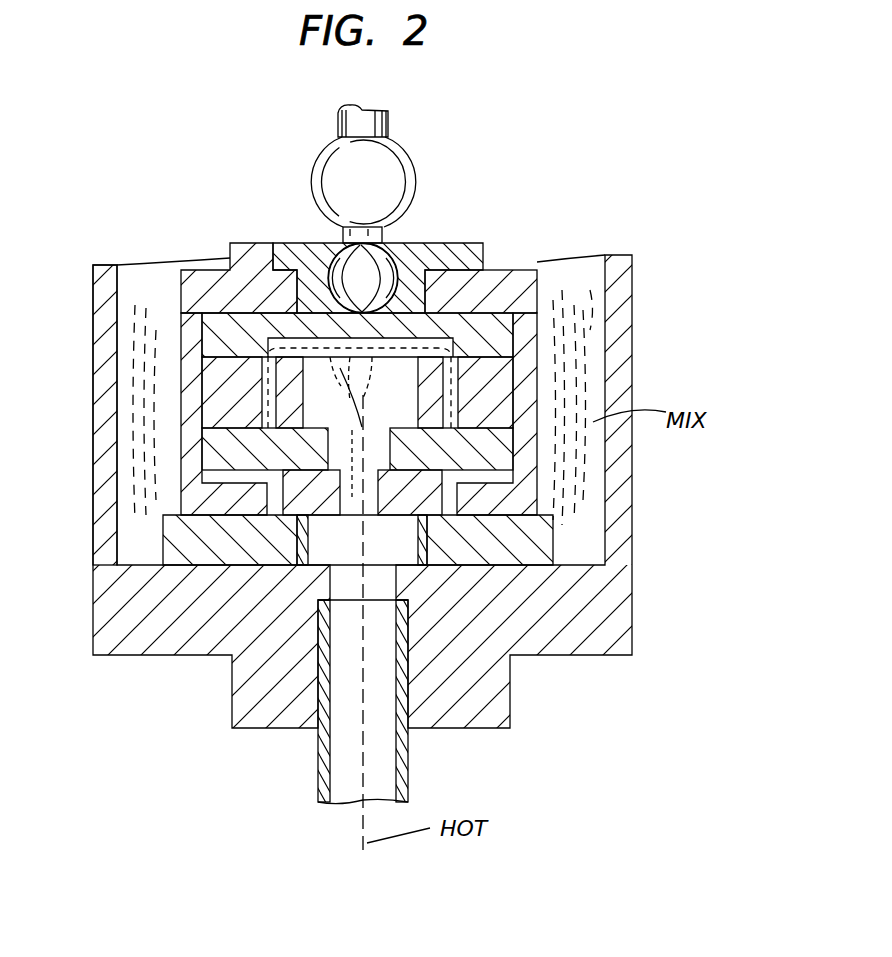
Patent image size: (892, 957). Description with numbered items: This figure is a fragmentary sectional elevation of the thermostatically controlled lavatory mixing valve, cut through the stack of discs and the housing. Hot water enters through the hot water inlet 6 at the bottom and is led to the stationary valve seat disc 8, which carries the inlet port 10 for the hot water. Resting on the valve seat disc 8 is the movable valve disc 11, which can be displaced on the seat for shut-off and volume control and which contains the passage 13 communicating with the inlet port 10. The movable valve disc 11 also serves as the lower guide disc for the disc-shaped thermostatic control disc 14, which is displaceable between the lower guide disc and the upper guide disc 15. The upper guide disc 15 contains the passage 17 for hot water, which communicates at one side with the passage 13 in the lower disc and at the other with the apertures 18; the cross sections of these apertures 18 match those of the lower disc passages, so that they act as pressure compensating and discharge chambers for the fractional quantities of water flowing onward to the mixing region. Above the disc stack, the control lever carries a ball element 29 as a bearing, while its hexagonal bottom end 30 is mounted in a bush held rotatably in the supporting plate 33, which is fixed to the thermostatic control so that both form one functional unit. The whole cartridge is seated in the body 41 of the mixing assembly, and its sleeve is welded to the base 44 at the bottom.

The hot water inlet 6 is at (410, 767).
The valve seat disc 8 is at (320, 490).
The inlet port 10 is at (344, 427).
The movable valve disc 11 is at (488, 457).
The passage 13 is at (380, 447).
The control disc 14 is at (280, 393).
The upper guide disc 15 is at (508, 335).
The passage 17 is at (410, 384).
The apertures 18 is at (290, 338).
The ball element 29 is at (385, 150).
The bottom end of control lever 30 is at (372, 263).
The supporting plate 33 is at (512, 277).
The body 41 is at (103, 277).
The base 44 is at (540, 550).